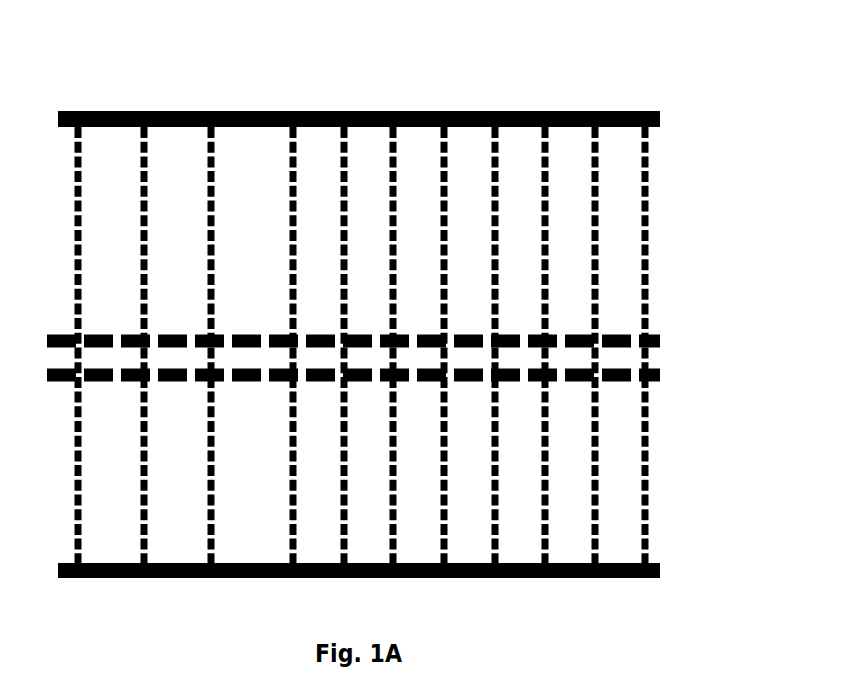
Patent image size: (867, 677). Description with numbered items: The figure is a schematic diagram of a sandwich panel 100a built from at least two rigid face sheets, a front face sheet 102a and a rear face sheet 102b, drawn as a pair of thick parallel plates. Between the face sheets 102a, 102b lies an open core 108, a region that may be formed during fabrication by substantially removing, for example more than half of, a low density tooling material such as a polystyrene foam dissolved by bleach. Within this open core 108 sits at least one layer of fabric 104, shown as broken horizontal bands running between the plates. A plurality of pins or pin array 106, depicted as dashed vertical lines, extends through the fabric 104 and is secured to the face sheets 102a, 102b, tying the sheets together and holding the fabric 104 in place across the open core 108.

The sandwich panel 100a is at (550, 110).
The front face sheet 102a is at (657, 125).
The rear face sheet 102b is at (655, 580).
The layer of fabric 104 is at (652, 366).
The pin array 106 is at (643, 255).
The open core 108 is at (617, 462).